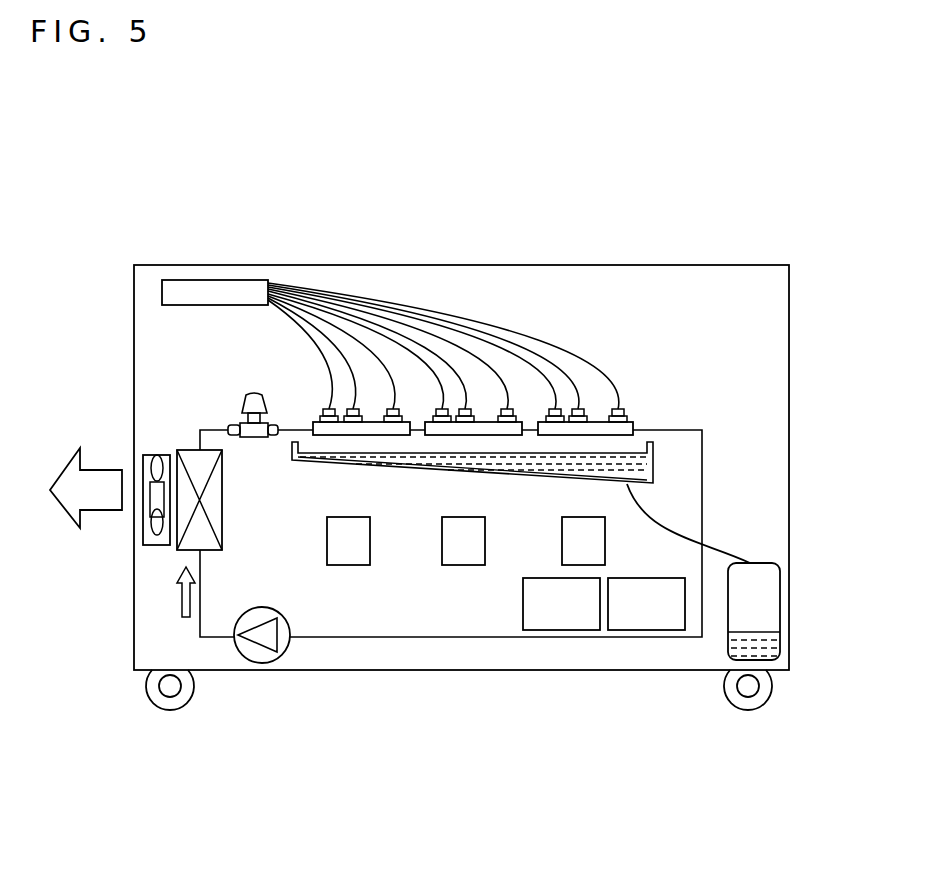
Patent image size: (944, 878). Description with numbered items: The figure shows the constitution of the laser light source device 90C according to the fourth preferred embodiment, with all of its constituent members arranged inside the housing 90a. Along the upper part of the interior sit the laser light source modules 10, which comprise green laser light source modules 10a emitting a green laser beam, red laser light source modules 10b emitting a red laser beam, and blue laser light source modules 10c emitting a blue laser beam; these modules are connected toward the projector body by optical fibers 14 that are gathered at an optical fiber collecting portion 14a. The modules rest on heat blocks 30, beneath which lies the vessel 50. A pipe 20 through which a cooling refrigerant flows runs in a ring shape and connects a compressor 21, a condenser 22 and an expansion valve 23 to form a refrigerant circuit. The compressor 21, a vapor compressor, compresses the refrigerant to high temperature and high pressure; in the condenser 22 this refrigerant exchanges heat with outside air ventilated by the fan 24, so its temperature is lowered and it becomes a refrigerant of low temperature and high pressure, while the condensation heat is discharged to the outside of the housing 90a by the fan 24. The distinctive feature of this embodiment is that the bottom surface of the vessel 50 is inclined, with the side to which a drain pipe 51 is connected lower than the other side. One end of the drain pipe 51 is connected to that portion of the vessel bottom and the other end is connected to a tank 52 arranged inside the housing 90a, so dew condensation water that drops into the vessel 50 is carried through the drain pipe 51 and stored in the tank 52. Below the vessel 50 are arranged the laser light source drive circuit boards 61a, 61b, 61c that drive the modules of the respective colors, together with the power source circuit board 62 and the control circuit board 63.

The laser light source device 90C is at (172, 142).
The housing 90a is at (789, 340).
The optical fiber collecting portion 14a is at (162, 293).
The optical fibers 14 is at (598, 348).
The pipe 20 is at (200, 430).
The expansion valve 23 is at (250, 393).
The condenser 22 is at (183, 553).
The fan 24 is at (143, 522).
The compressor 21 is at (250, 660).
The laser light source modules 10 is at (478, 387).
The green laser light source modules 10a is at (320, 410).
The red laser light source modules 10b is at (437, 408).
The blue laser light source modules 10c is at (622, 407).
The heat blocks 30 is at (330, 436).
The vessel 50 is at (657, 453).
The drain pipe 51 is at (730, 545).
The tank 52 is at (780, 592).
The laser light source drive circuit board 61a is at (343, 566).
The laser light source drive circuit board 61b is at (450, 566).
The laser light source drive circuit board 61c is at (562, 551).
The control circuit board 63 is at (577, 631).
The power source circuit board 62 is at (658, 631).